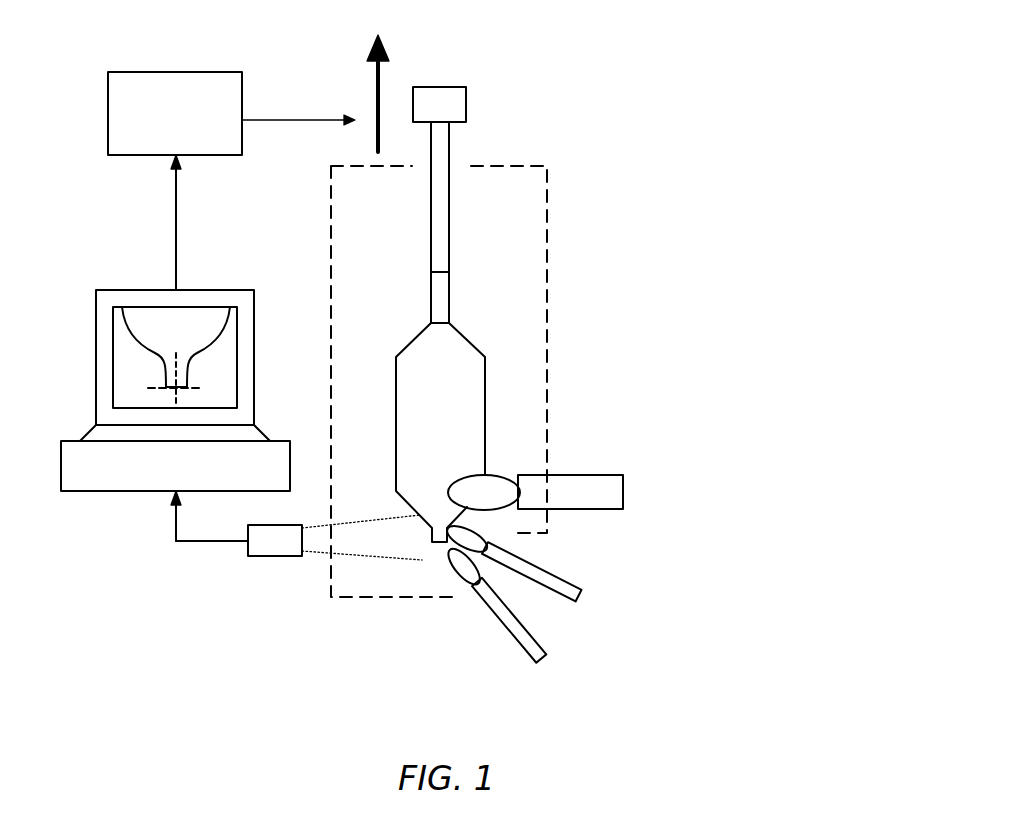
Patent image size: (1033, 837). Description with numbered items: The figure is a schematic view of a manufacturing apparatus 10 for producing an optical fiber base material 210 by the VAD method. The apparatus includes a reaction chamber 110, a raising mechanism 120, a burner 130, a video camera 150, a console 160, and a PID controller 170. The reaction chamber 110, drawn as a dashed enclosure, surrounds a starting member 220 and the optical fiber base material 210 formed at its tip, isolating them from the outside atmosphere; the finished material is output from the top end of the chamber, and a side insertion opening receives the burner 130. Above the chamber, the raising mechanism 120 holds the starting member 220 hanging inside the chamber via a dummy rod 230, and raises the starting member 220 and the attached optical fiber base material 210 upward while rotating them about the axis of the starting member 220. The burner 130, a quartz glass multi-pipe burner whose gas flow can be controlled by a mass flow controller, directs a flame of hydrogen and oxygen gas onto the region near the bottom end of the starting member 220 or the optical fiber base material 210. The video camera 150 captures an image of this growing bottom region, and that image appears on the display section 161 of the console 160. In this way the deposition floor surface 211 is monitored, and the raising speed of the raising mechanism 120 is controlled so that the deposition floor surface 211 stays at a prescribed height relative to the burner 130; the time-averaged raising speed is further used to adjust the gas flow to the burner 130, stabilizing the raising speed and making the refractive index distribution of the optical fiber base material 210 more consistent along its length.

The manufacturing apparatus 10 is at (720, 100).
The reaction chamber 110 is at (548, 302).
The raising mechanism 120 is at (467, 102).
The burner 130 is at (534, 474).
The video camera 150 is at (248, 560).
The console 160 is at (157, 323).
The display section 161 is at (204, 290).
The PID controller 170 is at (207, 72).
The optical fiber base material 210 is at (468, 333).
The deposition floor surface 211 is at (172, 390).
The starting member 220 is at (431, 291).
The dummy rod 230 is at (431, 220).